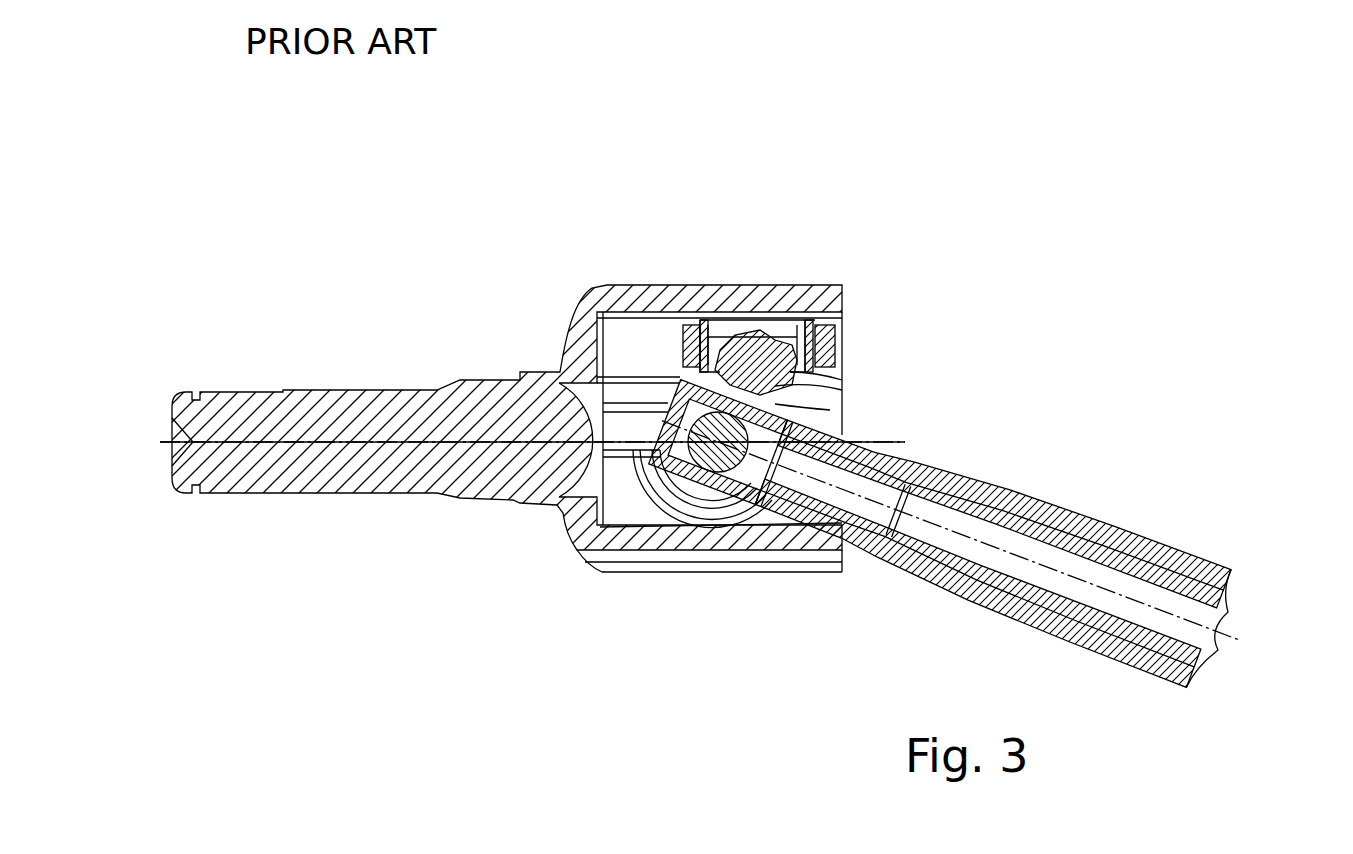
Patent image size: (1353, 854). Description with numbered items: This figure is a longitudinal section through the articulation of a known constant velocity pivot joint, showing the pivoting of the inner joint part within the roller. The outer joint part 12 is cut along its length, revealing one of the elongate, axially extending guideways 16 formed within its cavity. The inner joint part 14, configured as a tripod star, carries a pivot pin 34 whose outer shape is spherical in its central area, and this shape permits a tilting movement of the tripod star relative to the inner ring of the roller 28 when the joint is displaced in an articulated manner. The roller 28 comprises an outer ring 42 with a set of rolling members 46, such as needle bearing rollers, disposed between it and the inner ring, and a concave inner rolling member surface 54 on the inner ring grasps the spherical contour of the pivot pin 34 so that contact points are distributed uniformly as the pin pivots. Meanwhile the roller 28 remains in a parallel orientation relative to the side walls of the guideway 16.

The outer joint part 12 is at (590, 282).
The inner joint part 14 is at (800, 383).
The guideway 16 is at (645, 360).
The roller 28 is at (578, 545).
The pivot pin 34 is at (786, 332).
The outer ring 42 is at (688, 332).
The rolling members 46 is at (758, 338).
The inner rolling member surface 54 is at (792, 340).